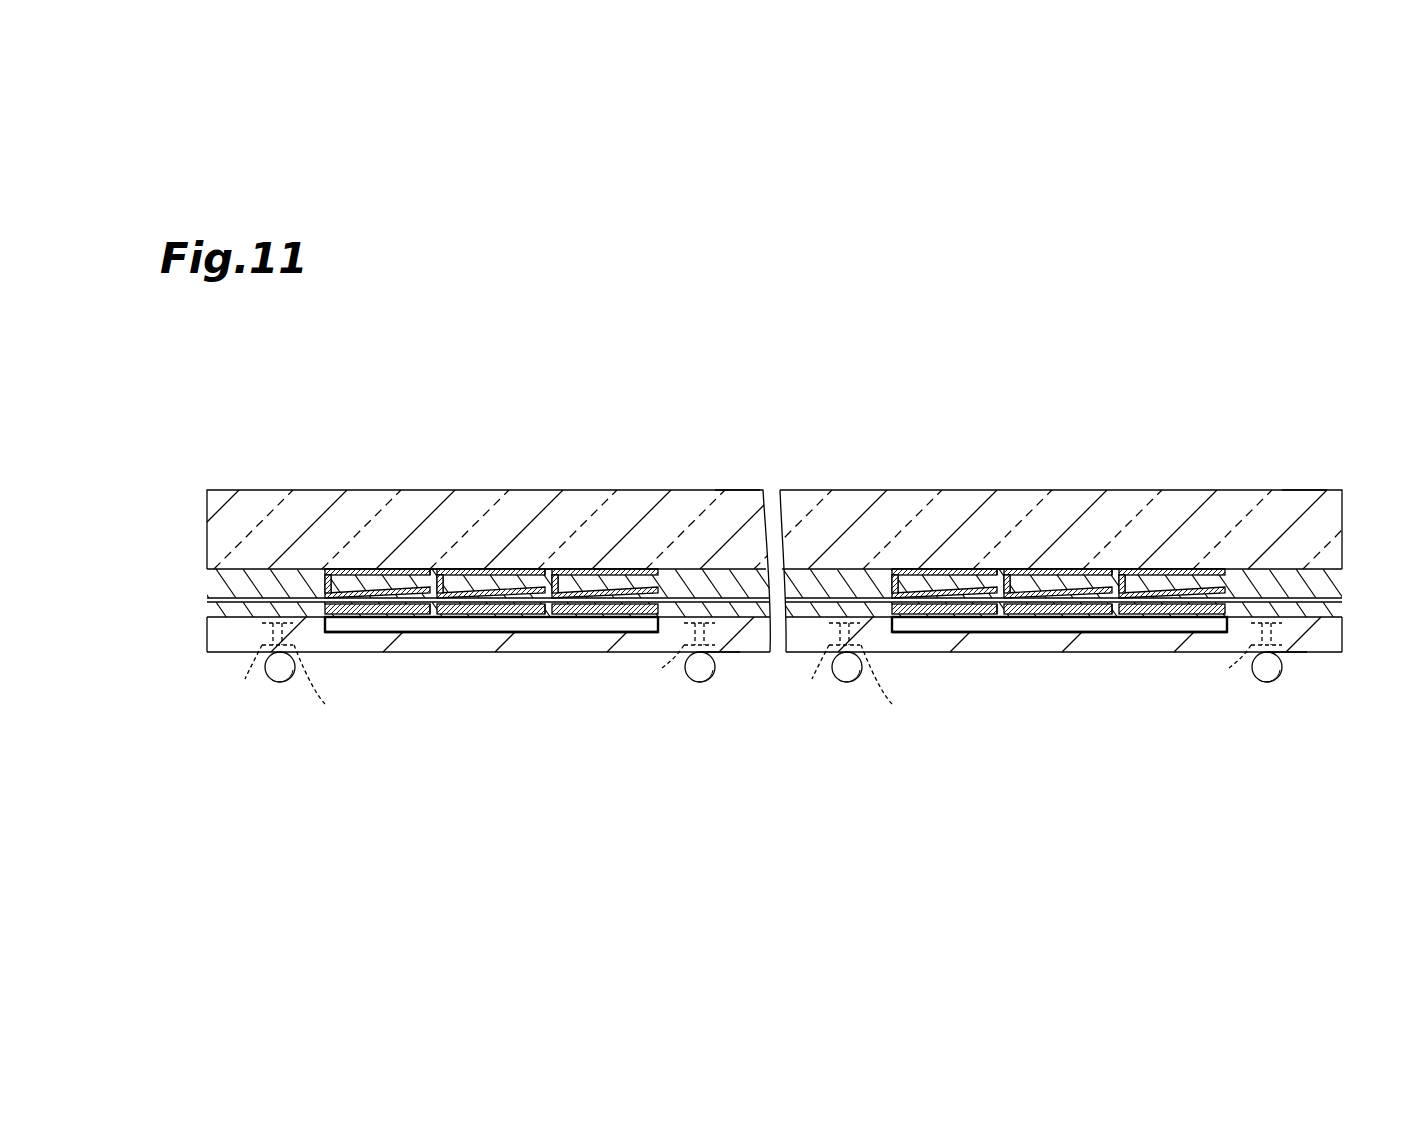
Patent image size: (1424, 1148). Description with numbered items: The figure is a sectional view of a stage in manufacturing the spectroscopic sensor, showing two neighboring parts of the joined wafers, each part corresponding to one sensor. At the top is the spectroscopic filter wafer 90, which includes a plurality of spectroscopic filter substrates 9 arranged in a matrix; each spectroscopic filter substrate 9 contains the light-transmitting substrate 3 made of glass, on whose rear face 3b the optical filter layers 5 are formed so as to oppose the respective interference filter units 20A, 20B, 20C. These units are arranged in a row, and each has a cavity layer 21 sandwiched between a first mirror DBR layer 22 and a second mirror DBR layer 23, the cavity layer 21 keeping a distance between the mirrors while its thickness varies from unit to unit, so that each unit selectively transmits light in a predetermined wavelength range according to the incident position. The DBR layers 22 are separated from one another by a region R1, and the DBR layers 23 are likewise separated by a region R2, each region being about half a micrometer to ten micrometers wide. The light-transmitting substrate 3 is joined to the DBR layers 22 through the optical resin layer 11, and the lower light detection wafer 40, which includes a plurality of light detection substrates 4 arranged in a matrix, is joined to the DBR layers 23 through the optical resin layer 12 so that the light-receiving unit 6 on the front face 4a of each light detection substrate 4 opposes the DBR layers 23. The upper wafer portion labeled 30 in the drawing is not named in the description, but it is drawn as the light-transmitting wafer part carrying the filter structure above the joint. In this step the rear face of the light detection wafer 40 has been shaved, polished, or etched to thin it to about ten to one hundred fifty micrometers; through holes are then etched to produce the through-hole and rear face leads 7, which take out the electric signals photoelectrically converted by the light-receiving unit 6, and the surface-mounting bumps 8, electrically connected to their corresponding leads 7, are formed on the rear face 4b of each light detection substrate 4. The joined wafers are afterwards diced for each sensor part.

The light-transmitting substrate 3 is at (1335, 540).
The rear face of the light-transmitting substrate 3b is at (1318, 573).
The light detection substrate 4 is at (1335, 637).
The front face of the light detection substrate 4a is at (1327, 607).
The rear face of the light detection substrate 4b is at (728, 656).
The optical filter layer 5 is at (336, 579).
The light-receiving unit 6 is at (527, 633).
The leads 7 is at (756, 675).
The bumps 8 is at (281, 683).
The spectroscopic filter substrate 9 is at (570, 432).
The optical resin layer 11 is at (222, 586).
The optical resin layer 12 is at (222, 613).
The interference filter unit 20A is at (332, 569).
The interference filter unit 20B is at (440, 569).
The interference filter unit 20C is at (630, 569).
The cavity layer 21 is at (420, 633).
The DBR layer (first mirror layer) 22 is at (385, 569).
The DBR layer (second mirror layer) 23 is at (392, 615).
The lid 30 is at (1349, 505).
The light detection wafer 40 is at (1331, 662).
The spectroscopic filter wafer 90 is at (733, 490).
The region between adjacent DBR layers 22 R1 is at (433, 572).
The region between adjacent DBR layers 23 R2 is at (458, 617).